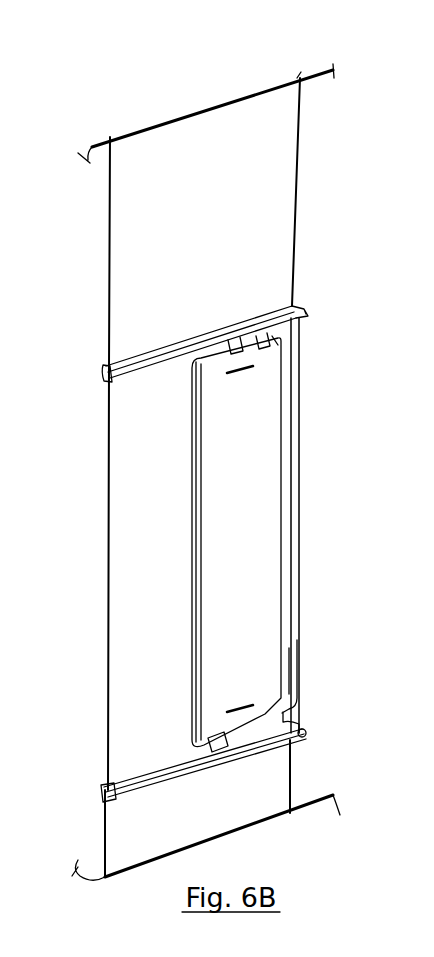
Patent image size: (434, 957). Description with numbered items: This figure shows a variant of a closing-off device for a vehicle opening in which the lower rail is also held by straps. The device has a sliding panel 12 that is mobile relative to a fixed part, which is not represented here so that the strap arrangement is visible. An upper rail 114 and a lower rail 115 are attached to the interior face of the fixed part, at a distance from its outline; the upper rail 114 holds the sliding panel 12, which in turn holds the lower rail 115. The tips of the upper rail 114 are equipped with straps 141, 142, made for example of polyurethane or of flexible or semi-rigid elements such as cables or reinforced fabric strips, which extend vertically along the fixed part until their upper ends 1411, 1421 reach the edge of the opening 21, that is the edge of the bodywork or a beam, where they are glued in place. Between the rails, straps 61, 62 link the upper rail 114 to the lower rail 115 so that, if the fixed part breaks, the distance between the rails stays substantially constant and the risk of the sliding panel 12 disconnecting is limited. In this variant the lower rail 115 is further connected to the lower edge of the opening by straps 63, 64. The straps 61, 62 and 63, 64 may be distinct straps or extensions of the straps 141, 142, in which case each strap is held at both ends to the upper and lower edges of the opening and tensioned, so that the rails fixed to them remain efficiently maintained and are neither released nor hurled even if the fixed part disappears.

The sliding panel 12 is at (248, 553).
The edge of the opening 21 is at (313, 71).
The strap 61 is at (108, 478).
The strap 62 is at (300, 353).
The strap 63 is at (102, 820).
The strap 64 is at (293, 753).
The upper rail 114 is at (128, 380).
The lower rail 115 is at (160, 770).
The strap 141 is at (107, 207).
The strap 142 is at (297, 153).
The upper end of the strap 1411 is at (110, 138).
The upper end of the strap 1421 is at (300, 79).